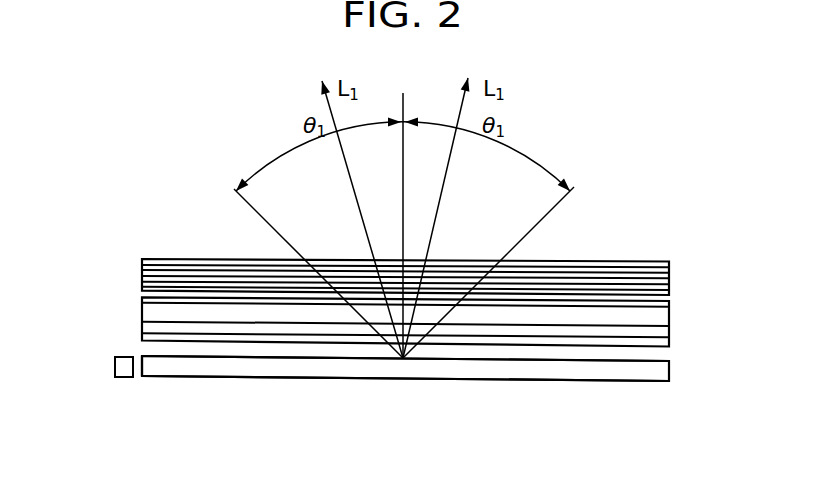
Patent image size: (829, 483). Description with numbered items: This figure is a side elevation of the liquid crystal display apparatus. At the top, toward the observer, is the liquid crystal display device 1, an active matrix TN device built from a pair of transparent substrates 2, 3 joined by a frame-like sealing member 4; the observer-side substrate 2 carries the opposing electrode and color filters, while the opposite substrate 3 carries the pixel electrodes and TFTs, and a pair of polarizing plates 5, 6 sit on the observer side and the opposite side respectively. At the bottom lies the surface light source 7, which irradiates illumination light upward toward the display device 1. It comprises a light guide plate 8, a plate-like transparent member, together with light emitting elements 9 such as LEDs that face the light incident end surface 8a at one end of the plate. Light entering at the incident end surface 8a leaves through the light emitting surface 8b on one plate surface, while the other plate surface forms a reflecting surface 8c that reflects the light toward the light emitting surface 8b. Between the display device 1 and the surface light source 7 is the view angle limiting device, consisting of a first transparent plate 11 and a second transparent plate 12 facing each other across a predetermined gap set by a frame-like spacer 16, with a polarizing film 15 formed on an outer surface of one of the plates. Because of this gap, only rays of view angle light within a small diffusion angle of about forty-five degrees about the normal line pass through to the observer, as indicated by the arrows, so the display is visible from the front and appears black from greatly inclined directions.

The liquid crystal display device 1 is at (674, 242).
The transparent substrate 2 is at (142, 262).
The transparent substrate 3 is at (142, 283).
The sealing member 4 is at (240, 276).
The polarizing plate 5 is at (168, 259).
The polarizing plate 6 is at (202, 286).
The surface light source 7 is at (686, 376).
The light guide plate 8 is at (542, 373).
The light incident end surface 8a is at (147, 365).
The light emitting surface 8b is at (448, 360).
The reflecting surface 8c is at (332, 380).
The light emitting elements 9 is at (115, 367).
The first transparent plate 11 is at (558, 333).
The second transparent plate 12 is at (601, 305).
The polarizing film 15 is at (602, 347).
The spacer 16 is at (638, 315).